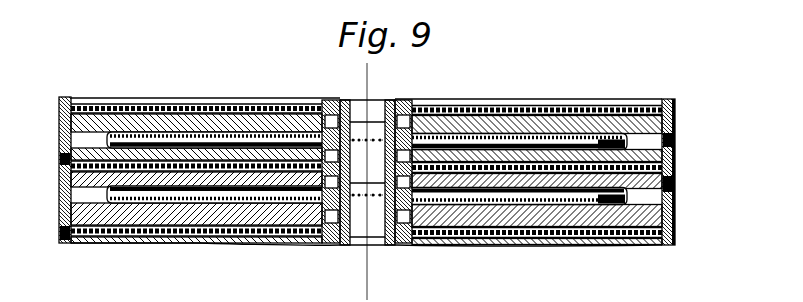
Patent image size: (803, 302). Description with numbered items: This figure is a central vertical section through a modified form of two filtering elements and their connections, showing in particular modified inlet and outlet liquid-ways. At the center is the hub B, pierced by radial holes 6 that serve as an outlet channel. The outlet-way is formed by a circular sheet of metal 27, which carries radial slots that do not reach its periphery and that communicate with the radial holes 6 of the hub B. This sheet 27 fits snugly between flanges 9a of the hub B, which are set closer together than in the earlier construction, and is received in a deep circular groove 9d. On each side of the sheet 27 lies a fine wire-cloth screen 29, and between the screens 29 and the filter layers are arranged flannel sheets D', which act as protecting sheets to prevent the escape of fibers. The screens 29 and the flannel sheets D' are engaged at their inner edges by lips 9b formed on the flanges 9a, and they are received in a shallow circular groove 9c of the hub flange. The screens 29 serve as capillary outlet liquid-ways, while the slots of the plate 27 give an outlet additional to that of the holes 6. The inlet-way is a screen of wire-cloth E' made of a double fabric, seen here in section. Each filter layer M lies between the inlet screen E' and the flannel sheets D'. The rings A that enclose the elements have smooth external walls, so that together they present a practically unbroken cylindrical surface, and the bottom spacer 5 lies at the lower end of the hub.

The ring A is at (59, 133).
The hub B is at (371, 115).
The flannel sheets D' is at (391, 175).
The wire-cloth screen E' is at (366, 163).
The packing layer M is at (647, 150).
The sheet of metal 27 is at (119, 143).
The fine wire-cloth screen 29 is at (587, 133).
The radial holes 6 is at (355, 145).
The spacer block 5 is at (332, 218).
The flanges 9a is at (418, 140).
The lips 9b is at (447, 212).
The shallow circular groove 9c is at (308, 138).
The deep circular groove 9d is at (326, 120).